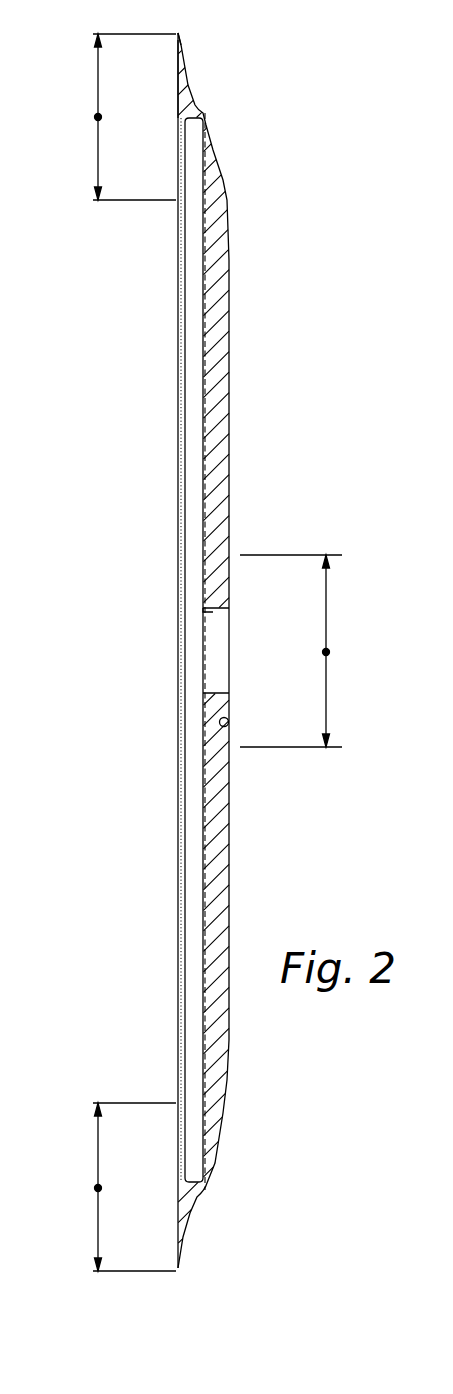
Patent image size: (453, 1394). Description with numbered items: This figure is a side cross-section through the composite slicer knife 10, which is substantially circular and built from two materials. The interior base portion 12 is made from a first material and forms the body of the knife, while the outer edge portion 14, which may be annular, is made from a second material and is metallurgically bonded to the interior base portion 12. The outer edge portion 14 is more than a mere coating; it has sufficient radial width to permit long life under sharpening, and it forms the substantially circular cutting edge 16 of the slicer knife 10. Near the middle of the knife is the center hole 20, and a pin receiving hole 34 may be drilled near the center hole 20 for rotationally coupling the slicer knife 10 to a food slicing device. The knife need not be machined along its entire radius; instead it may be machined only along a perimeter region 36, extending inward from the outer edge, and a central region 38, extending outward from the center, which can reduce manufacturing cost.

The slicer knife 10 is at (237, 299).
The interior base portion 12 is at (228, 832).
The outer edge portion 14 is at (178, 43).
The cutting edge 16 is at (180, 33).
The center hole 20 is at (213, 614).
The pin receiving hole 34 is at (229, 722).
The perimeter region 36 is at (98, 117).
The central region 38 is at (326, 652).